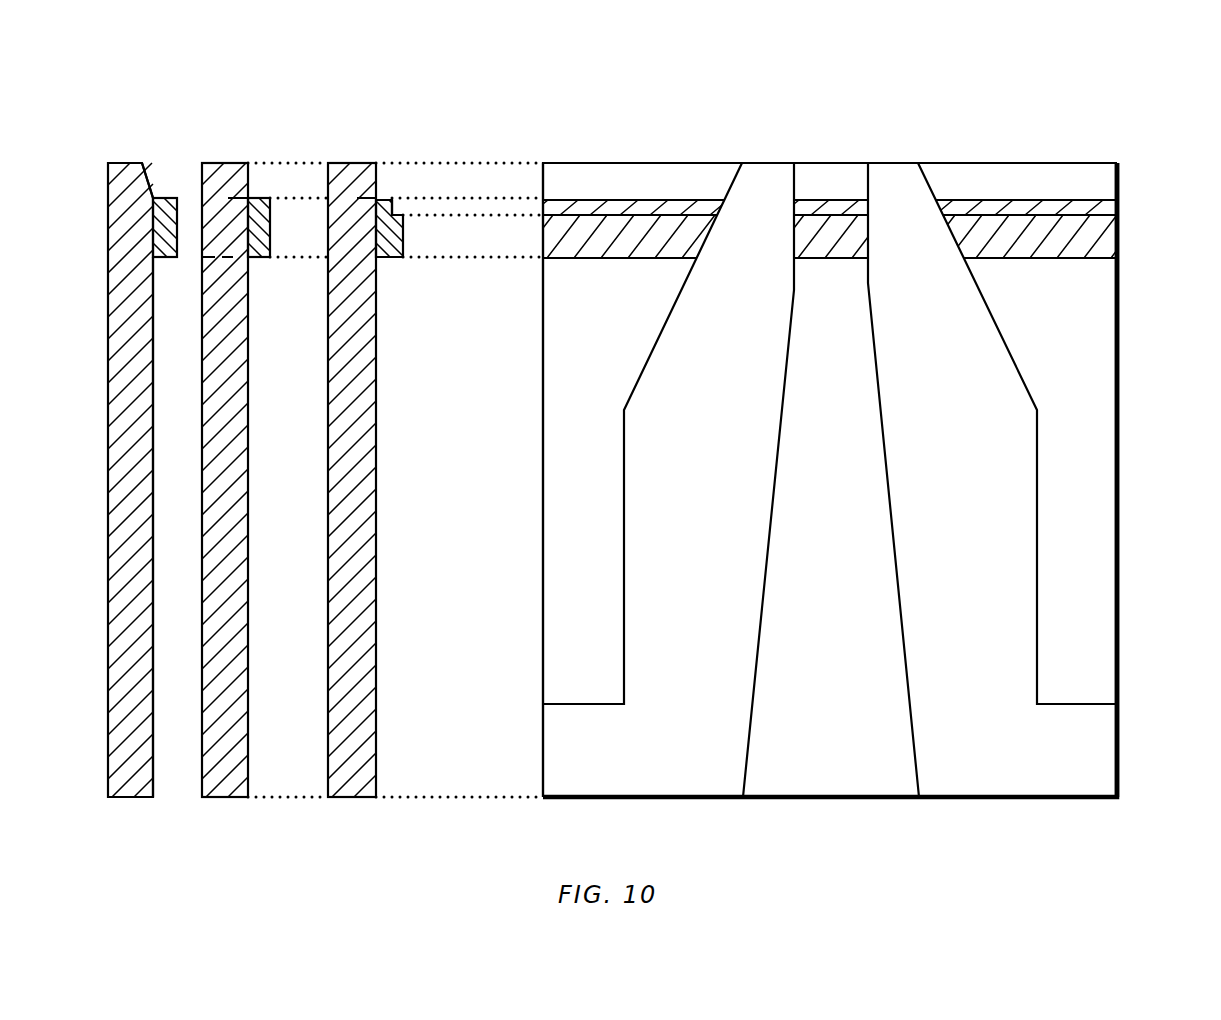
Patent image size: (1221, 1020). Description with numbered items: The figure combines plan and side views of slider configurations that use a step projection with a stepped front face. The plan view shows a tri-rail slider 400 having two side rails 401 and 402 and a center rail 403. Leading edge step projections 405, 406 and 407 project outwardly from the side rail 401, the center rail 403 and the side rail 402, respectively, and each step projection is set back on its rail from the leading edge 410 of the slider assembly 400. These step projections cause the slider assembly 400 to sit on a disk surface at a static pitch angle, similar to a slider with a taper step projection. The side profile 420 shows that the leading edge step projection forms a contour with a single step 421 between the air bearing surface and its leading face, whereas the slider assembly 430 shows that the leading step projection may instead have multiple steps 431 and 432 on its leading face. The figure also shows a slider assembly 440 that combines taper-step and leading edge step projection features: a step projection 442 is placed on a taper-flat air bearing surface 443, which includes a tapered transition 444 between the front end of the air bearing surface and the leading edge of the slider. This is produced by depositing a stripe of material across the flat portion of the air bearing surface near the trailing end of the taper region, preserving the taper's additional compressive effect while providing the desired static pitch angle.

The tri-rail slider 400 is at (1060, 135).
The side rail 401 is at (578, 595).
The side rail 402 is at (1103, 598).
The center rail 403 is at (818, 452).
The leading edge step projection 405 is at (557, 225).
The leading edge step projection 406 is at (855, 207).
The leading edge step projection 407 is at (1105, 243).
The leading edge 410 is at (765, 163).
The side profile 420 is at (228, 148).
The single step 421 is at (250, 198).
The slider assembly 430 is at (362, 150).
The step 431 is at (392, 200).
The step 432 is at (395, 215).
The slider assembly 440 is at (105, 147).
The step projection 442 is at (177, 212).
The taper-flat air bearing surface 443 is at (153, 275).
The tapered transition 444 is at (153, 185).